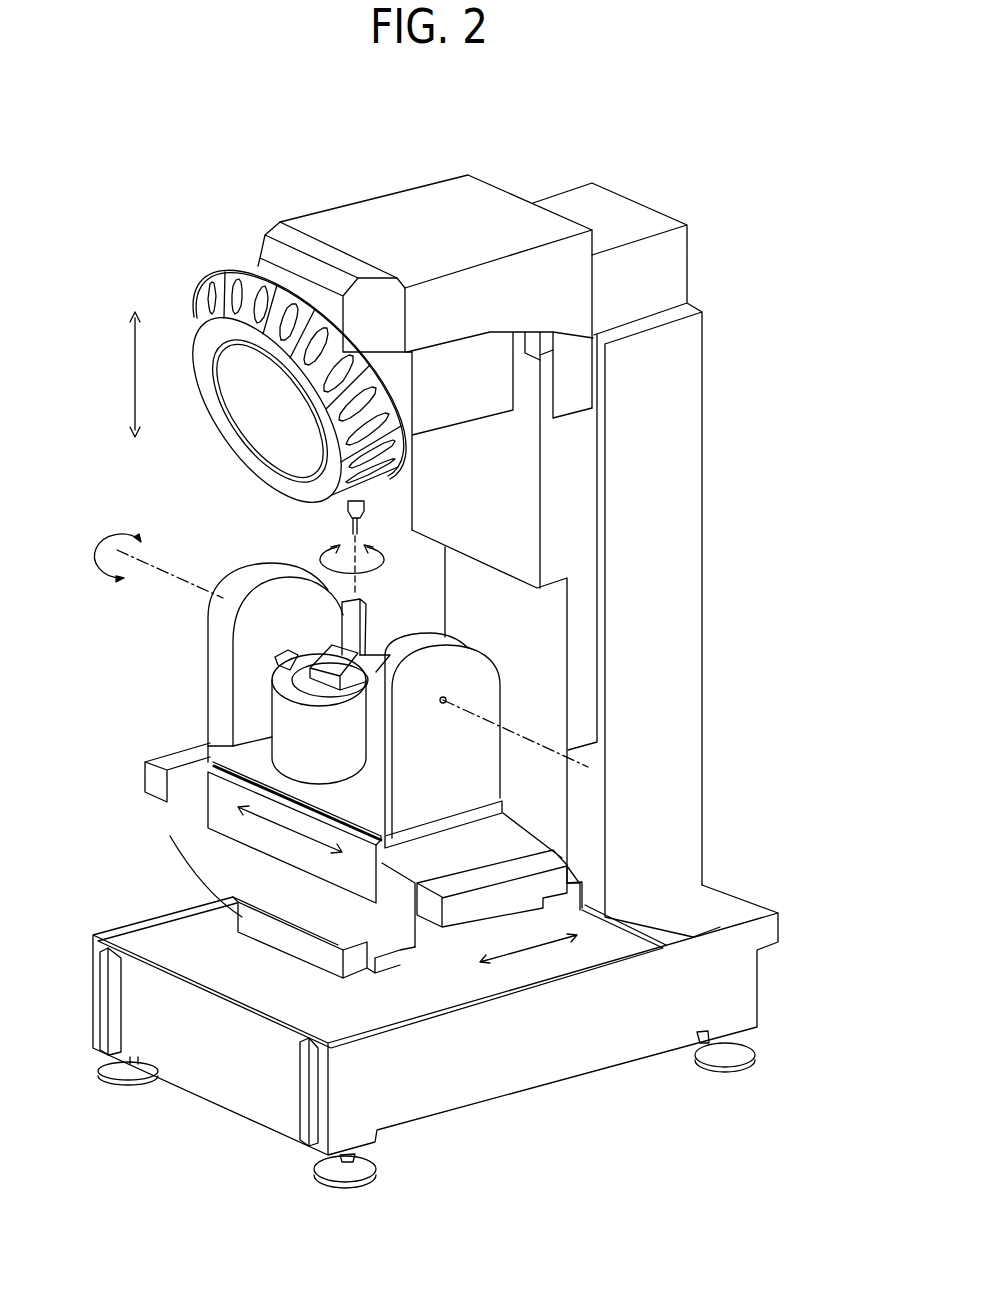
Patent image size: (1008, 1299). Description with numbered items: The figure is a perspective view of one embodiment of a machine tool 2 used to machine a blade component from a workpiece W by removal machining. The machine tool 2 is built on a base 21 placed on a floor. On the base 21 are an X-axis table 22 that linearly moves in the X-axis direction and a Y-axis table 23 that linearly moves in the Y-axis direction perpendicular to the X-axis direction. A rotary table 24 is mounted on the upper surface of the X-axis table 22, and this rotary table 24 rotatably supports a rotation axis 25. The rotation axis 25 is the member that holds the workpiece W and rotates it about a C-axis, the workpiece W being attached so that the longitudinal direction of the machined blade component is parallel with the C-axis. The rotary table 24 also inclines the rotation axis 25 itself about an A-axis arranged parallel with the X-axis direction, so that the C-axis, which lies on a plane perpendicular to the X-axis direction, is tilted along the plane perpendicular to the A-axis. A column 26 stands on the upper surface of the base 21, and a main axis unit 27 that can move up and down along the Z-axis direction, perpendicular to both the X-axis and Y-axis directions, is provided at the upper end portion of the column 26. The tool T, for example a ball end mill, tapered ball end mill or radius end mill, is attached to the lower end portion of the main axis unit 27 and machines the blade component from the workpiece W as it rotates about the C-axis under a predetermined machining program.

The machine tool 2 is at (704, 134).
The base 21 is at (747, 992).
The X-axis table 22 is at (182, 833).
The Y-axis table 23 is at (242, 917).
The rotary table 24 is at (207, 638).
The rotation axis 25 is at (278, 717).
The column 26 is at (702, 580).
The main axis unit 27 is at (498, 385).
The tool T is at (348, 516).
The workpiece W is at (367, 625).